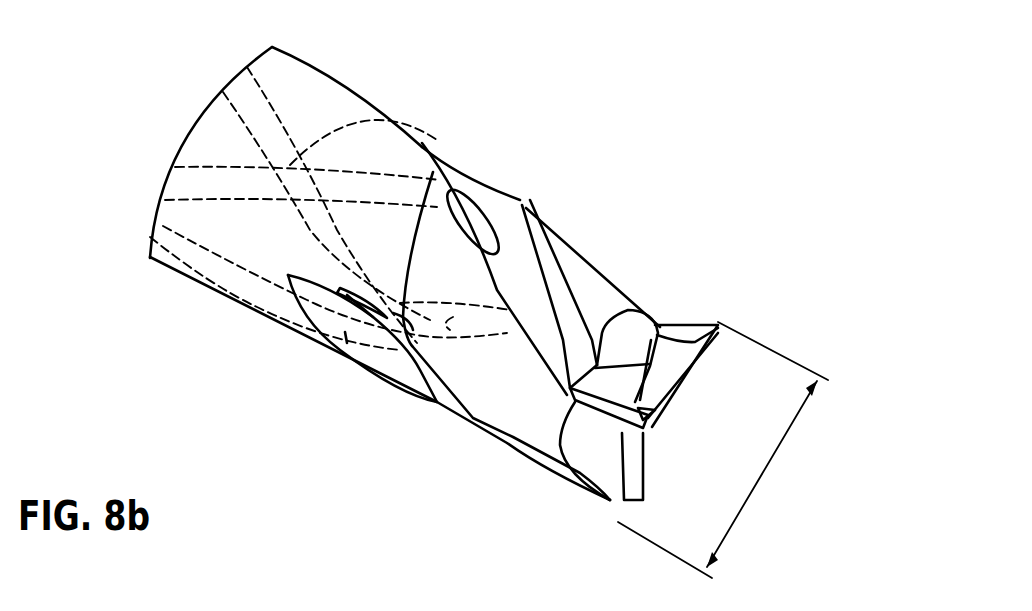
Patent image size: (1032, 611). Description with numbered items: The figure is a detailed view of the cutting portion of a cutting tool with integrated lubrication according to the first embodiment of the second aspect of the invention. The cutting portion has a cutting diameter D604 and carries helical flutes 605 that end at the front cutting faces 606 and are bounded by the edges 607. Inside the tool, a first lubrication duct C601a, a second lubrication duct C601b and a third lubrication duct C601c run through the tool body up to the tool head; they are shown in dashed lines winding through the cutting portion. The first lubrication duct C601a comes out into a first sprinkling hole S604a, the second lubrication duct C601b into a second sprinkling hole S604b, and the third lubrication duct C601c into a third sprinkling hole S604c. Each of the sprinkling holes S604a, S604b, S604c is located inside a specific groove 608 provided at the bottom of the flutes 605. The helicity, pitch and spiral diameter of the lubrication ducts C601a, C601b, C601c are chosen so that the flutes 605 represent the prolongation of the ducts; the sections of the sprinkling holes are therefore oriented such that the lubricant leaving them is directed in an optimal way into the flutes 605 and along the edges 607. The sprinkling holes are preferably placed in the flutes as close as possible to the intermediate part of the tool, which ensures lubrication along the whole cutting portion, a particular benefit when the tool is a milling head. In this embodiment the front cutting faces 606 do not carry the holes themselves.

The first lubrication duct C601a is at (227, 185).
The second lubrication duct C601b is at (210, 243).
The third lubrication duct C601c is at (310, 218).
The first sprinkling hole S604a is at (497, 187).
The second sprinkling hole S604b is at (483, 327).
The third sprinkling hole S604c is at (347, 343).
The flutes 605 is at (532, 176).
The front cutting faces 606 is at (693, 368).
The edges 607 is at (548, 254).
The groove 608 is at (511, 265).
The cutting diameter D604 is at (730, 450).